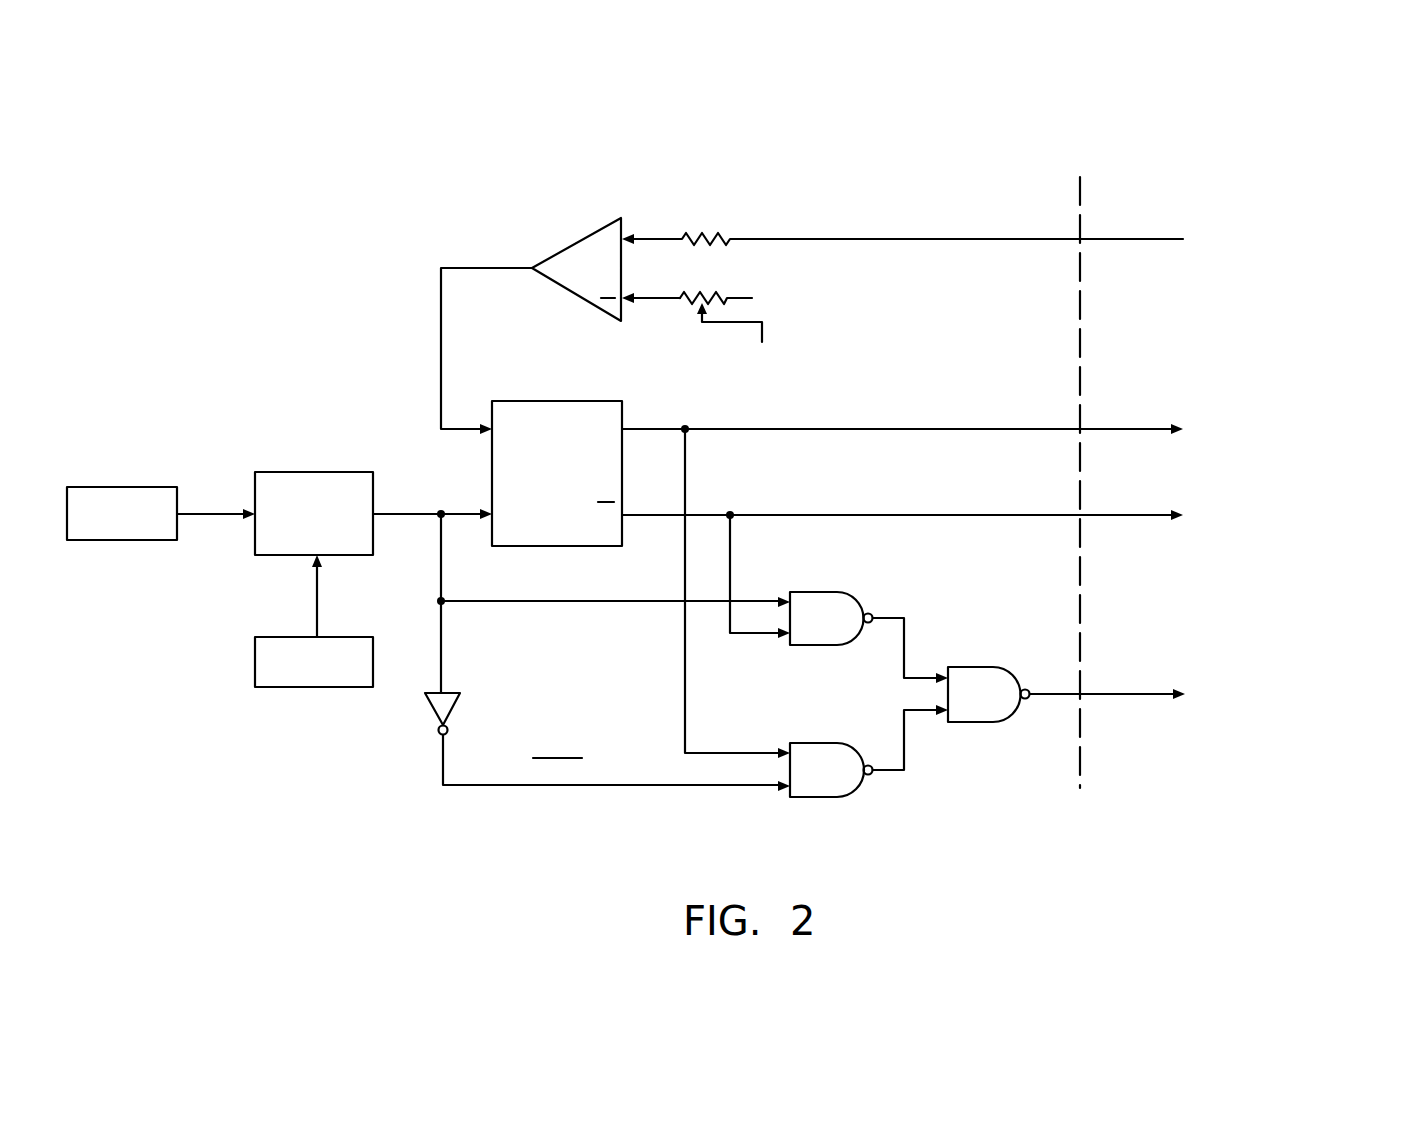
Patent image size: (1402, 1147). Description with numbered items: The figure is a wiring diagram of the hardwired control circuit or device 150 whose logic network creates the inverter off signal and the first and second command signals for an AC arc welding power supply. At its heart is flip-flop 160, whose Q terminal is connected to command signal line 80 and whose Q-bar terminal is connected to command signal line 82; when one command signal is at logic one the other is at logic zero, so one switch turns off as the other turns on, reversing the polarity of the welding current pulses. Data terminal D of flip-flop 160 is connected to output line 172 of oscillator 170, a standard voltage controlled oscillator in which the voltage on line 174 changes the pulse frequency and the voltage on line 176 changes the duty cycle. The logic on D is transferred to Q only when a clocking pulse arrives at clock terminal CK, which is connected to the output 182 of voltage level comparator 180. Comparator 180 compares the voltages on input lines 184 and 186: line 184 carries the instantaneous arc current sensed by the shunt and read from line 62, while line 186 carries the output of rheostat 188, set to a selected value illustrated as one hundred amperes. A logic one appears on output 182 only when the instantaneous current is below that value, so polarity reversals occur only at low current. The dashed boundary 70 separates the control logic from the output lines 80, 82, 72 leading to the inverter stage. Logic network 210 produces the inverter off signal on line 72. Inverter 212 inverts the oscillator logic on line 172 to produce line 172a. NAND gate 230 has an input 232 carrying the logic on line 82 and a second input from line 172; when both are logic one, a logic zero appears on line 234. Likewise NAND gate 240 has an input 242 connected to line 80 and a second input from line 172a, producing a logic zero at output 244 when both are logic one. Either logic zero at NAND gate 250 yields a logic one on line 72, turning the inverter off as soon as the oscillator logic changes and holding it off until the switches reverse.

The control circuit 150 is at (393, 222).
The flip-flop 160 is at (551, 400).
The oscillator 170 is at (312, 470).
The output line 172 is at (400, 513).
The inverted oscillator line 172a is at (593, 788).
The frequency input line 174 is at (315, 602).
The duty cycle input line 176 is at (213, 510).
The voltage level comparator 180 is at (570, 243).
The comparator output 182 is at (440, 333).
The input line 184 is at (650, 235).
The input line 186 is at (638, 302).
The rheostat 188 is at (717, 293).
The line 62 is at (1133, 238).
The circuit boundary 70 is at (1080, 320).
The command signal line 80 is at (1125, 427).
The command signal line 82 is at (1115, 515).
The inverter off signal line 72 is at (1127, 692).
The logic network 210 is at (463, 810).
The inverter 212 is at (452, 710).
The NAND gate 230 is at (827, 590).
The input 232 is at (732, 558).
The output line 234 is at (892, 615).
The NAND gate 240 is at (835, 798).
The input 242 is at (682, 688).
The output 244 is at (905, 745).
The NAND gate 250 is at (993, 665).